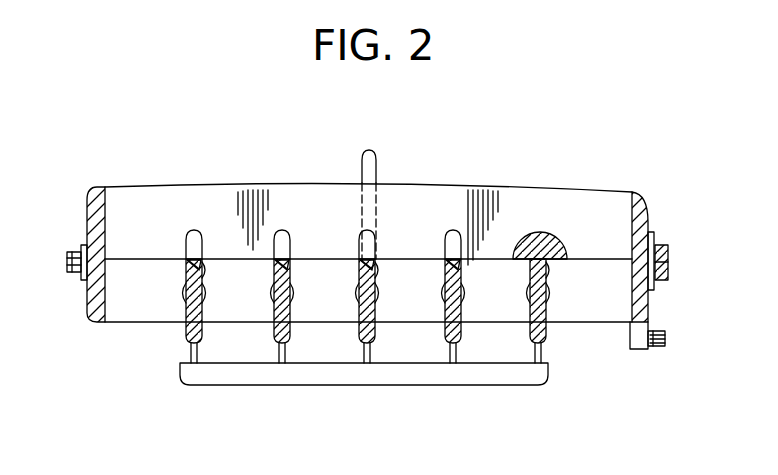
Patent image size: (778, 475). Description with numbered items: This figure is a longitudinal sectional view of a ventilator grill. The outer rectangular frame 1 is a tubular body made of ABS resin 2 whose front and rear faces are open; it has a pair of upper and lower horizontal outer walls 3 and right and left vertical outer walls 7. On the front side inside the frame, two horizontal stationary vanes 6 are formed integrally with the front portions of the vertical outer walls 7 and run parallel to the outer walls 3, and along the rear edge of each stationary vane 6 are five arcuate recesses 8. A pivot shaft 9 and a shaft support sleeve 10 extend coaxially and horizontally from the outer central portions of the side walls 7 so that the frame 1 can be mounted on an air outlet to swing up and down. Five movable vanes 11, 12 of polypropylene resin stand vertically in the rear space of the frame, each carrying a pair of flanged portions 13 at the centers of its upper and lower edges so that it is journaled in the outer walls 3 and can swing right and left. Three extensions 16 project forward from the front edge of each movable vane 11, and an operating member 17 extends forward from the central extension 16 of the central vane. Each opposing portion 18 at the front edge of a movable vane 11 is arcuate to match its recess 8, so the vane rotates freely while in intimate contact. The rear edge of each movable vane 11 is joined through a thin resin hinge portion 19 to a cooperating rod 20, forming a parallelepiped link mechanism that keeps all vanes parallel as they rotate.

The outer rectangular frame 1 is at (91, 187).
The ABS resin 2 is at (364, 261).
The horizontal outer wall 3 is at (115, 320).
The horizontal stationary vane 6 is at (163, 187).
The vertical outer wall 7 is at (87, 215).
The arcuate recess 8 is at (198, 261).
The pivot shaft 9 is at (66, 262).
The shaft support sleeve 10 is at (668, 263).
The movable vane 11 is at (345, 314).
The contact terminal 12 is at (184, 341).
The flanged portion 13 is at (185, 293).
The extension 16 is at (188, 238).
The operating member 17 is at (362, 162).
The opposing portion 18 is at (204, 272).
The thin resin hinge portion 19 is at (198, 358).
The cooperating rod 20 is at (262, 386).